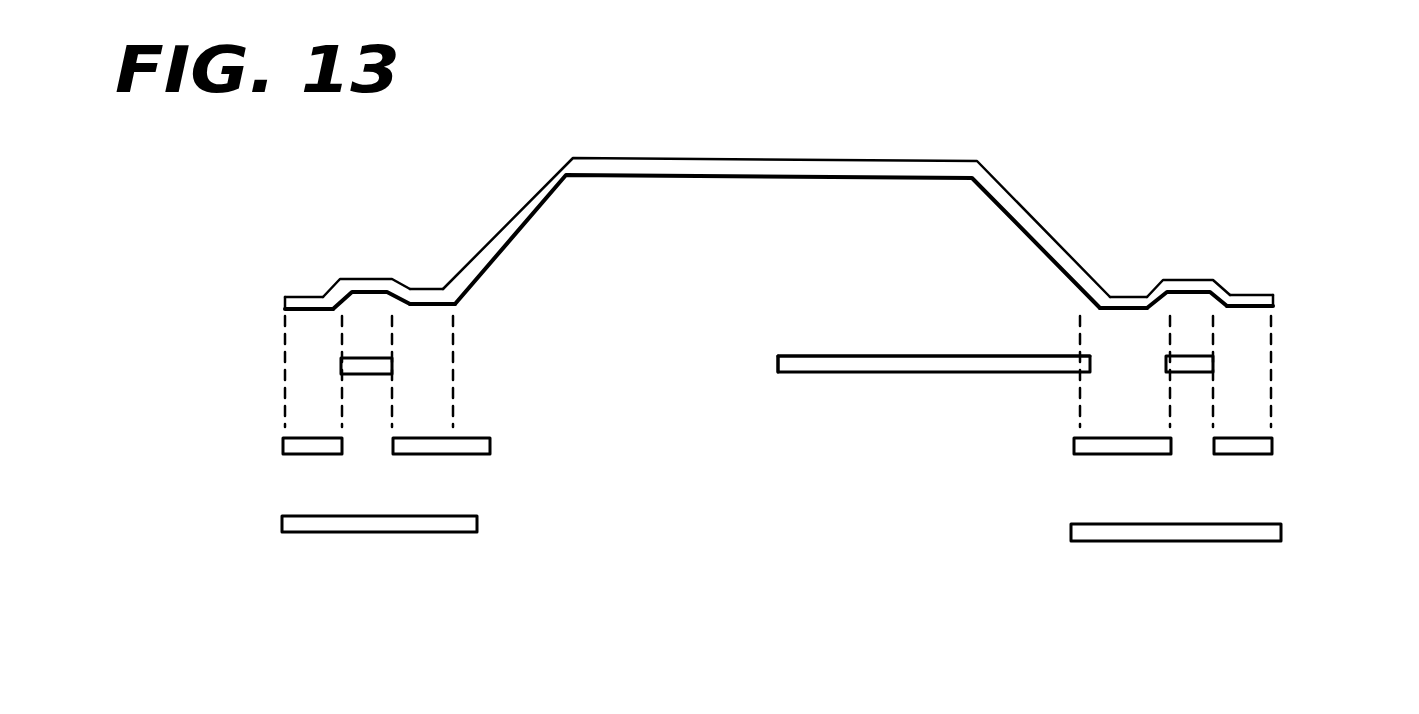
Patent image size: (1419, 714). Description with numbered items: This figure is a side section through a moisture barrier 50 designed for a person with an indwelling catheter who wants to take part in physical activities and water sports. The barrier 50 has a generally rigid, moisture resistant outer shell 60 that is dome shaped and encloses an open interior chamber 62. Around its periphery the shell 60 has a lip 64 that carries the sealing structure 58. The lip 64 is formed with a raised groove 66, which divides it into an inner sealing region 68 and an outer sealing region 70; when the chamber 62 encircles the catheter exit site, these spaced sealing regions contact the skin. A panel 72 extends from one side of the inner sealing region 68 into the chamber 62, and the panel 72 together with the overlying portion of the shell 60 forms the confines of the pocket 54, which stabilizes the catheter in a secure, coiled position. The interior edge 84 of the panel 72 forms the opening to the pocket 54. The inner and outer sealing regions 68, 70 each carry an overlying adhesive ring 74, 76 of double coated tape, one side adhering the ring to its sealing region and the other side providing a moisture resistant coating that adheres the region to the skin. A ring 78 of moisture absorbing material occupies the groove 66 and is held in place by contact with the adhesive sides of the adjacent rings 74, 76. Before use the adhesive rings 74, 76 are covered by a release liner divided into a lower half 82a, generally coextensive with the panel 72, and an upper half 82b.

The moisture barrier 50 is at (998, 143).
The pocket 54 is at (813, 288).
The sealing structure 58 is at (273, 399).
The outer shell 60 is at (793, 157).
The interior chamber 62 is at (693, 239).
The peripheral lip 64 is at (375, 278).
The raised groove 66 is at (368, 300).
The inner sealing region 68 is at (423, 306).
The outer sealing region 70 is at (289, 311).
The panel 72 is at (925, 374).
The adhesive ring 74 is at (492, 452).
The adhesive ring 76 is at (282, 455).
The moisture absorbing ring 78 is at (340, 365).
The lower half of release liner 82a is at (1208, 544).
The upper half of release liner 82b is at (383, 536).
The interior edge of panel 84 is at (778, 366).